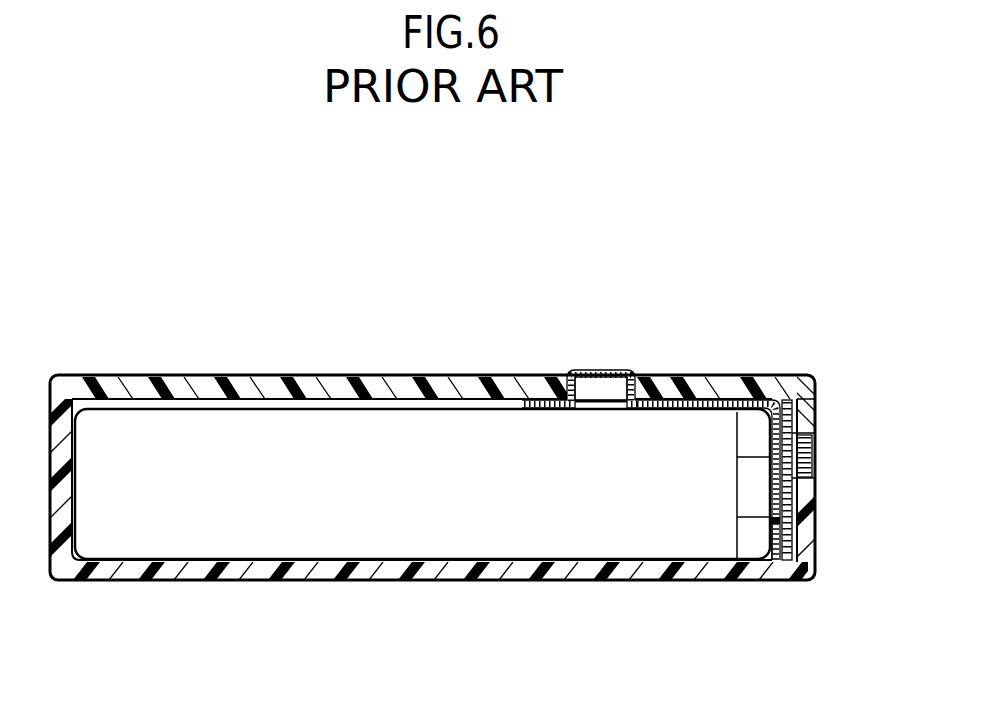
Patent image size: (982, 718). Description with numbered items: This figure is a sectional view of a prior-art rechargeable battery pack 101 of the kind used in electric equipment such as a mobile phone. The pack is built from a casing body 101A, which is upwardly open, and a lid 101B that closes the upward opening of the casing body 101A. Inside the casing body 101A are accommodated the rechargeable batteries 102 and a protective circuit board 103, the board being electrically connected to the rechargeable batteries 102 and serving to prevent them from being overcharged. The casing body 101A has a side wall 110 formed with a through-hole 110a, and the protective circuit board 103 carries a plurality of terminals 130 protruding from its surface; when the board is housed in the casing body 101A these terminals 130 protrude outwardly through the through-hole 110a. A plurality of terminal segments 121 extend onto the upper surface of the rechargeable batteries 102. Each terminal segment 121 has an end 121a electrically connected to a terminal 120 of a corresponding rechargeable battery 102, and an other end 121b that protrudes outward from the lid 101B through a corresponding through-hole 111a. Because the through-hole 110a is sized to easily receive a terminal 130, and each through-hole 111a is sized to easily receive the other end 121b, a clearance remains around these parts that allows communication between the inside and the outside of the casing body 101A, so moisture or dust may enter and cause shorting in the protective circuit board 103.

The rechargeable battery pack 101 is at (430, 348).
The casing body 101A is at (410, 578).
The lid 101B is at (288, 376).
The rechargeable batteries 102 is at (495, 402).
The protective circuit board 103 is at (773, 537).
The side wall 110 is at (813, 535).
The through-hole 110a is at (813, 463).
The through-holes 111a is at (598, 372).
The terminal 120 is at (755, 508).
The terminal segments 121 is at (772, 375).
The end of terminal segment 121a is at (813, 515).
The other end of terminal segment 121b is at (620, 373).
The terminals 130 is at (813, 450).